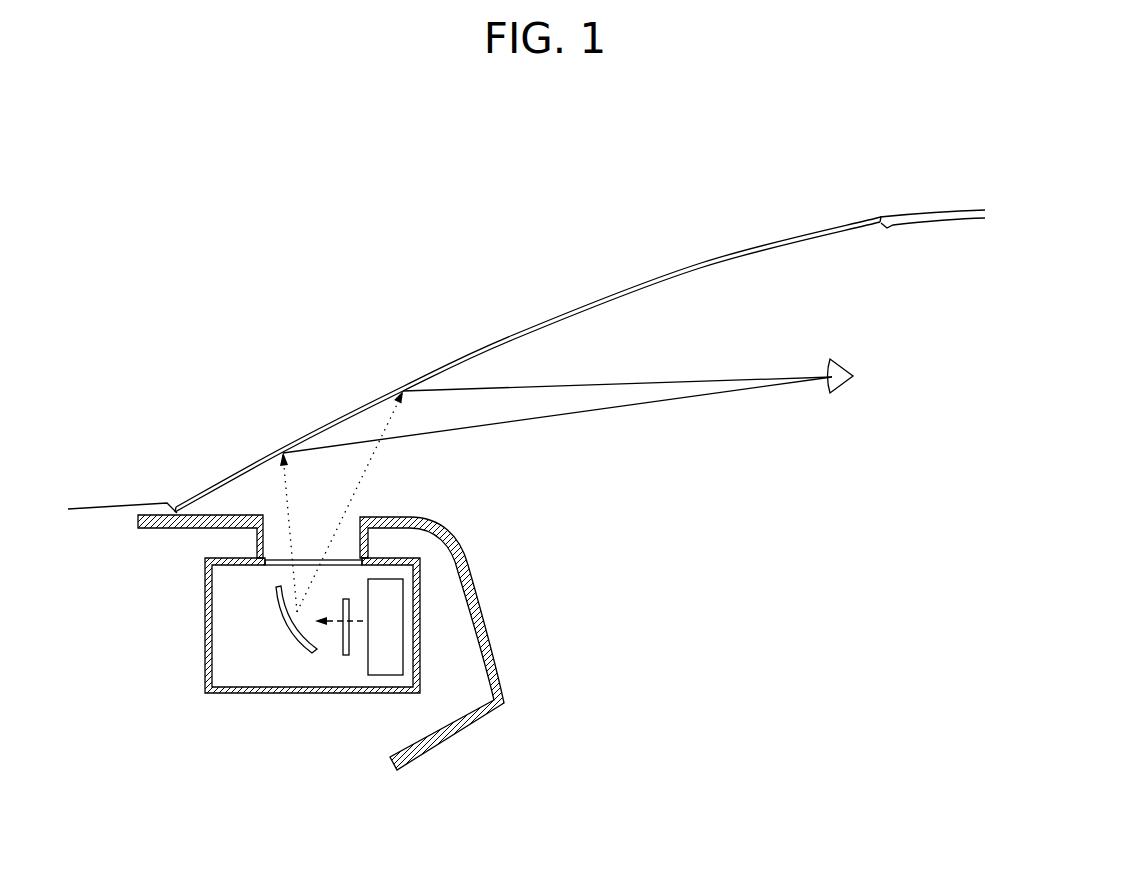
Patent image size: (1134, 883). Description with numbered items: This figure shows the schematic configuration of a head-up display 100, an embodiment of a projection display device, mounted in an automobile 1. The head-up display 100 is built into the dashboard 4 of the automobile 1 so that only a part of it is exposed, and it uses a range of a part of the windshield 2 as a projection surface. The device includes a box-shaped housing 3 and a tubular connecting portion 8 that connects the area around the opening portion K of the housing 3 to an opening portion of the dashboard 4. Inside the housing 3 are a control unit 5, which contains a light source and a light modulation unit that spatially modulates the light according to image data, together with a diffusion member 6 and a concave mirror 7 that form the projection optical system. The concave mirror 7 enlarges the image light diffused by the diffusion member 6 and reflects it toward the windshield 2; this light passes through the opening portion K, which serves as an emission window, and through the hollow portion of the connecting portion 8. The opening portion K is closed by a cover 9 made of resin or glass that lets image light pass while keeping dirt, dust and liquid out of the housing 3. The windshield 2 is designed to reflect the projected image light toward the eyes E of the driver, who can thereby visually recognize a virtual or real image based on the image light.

The automobile 1 is at (588, 198).
The windshield 2 is at (512, 336).
The housing 3 is at (205, 608).
The dashboard 4 is at (463, 541).
The control unit 5 is at (382, 677).
The diffusion member 6 is at (346, 657).
The concave mirror 7 is at (297, 646).
The connecting portion 8 is at (262, 512).
The cover 9 is at (303, 558).
The opening portion K is at (268, 562).
The eyes E is at (855, 368).
The head-up display 100 is at (192, 669).